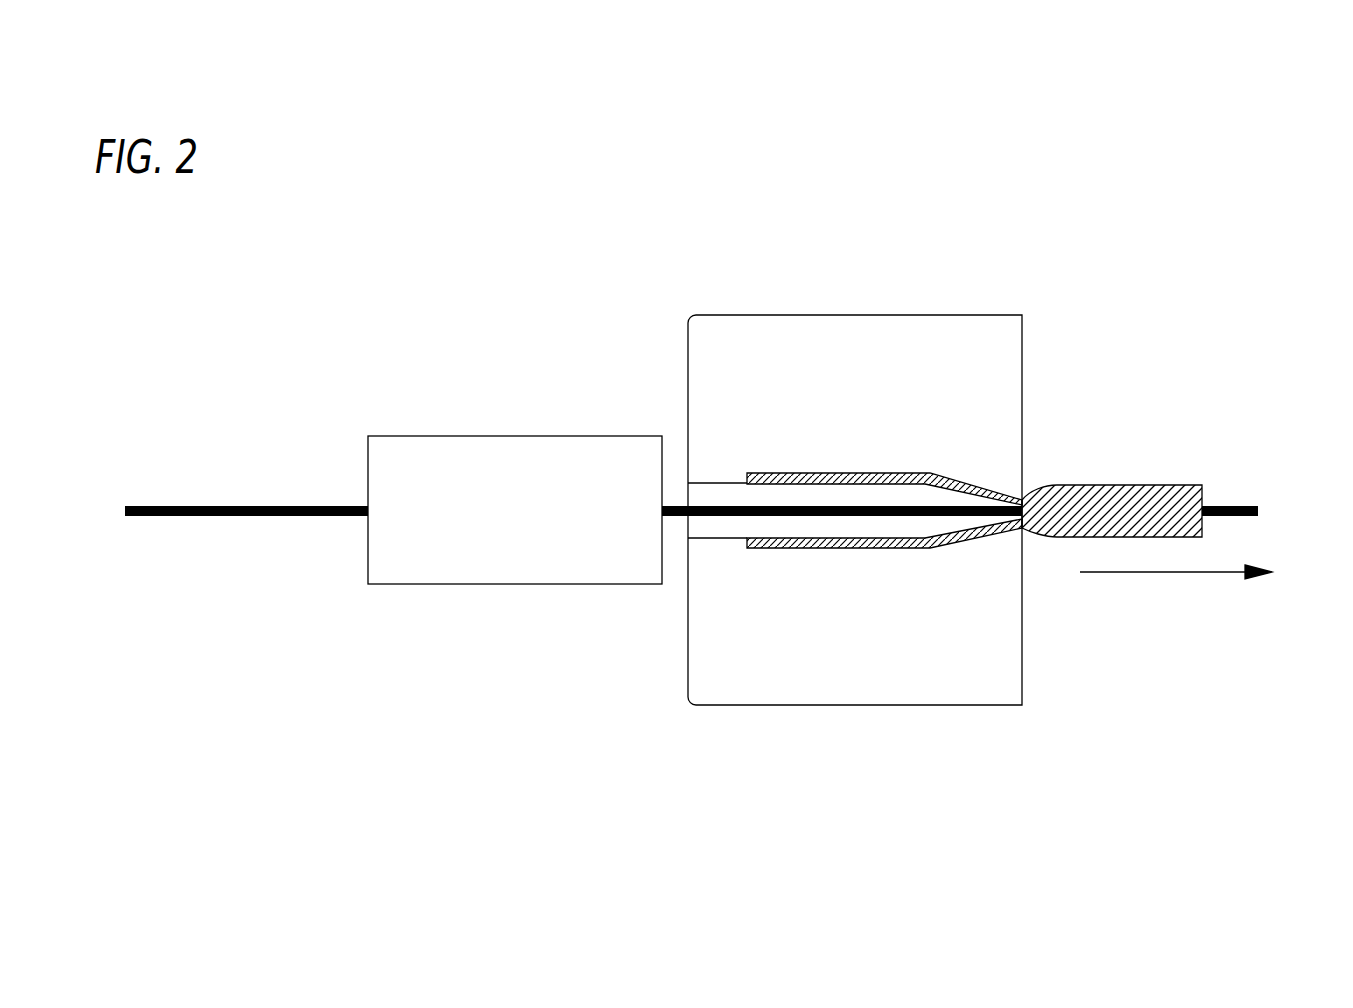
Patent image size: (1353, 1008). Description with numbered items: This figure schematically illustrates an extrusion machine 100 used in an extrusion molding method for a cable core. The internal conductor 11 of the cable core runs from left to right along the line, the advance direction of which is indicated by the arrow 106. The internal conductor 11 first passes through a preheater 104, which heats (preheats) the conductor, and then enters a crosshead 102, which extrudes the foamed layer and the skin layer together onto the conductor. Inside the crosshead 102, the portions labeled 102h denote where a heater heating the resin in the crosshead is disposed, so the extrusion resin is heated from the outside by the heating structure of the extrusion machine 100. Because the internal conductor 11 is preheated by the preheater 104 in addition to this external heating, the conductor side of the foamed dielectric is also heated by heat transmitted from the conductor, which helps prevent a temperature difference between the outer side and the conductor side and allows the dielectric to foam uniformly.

The extrusion machine 100 is at (210, 388).
The internal conductor 11 is at (178, 516).
The preheater 104 is at (410, 584).
The crosshead 102 is at (838, 705).
The heater portion 102h is at (812, 473).
The arrow 106 is at (1167, 572).